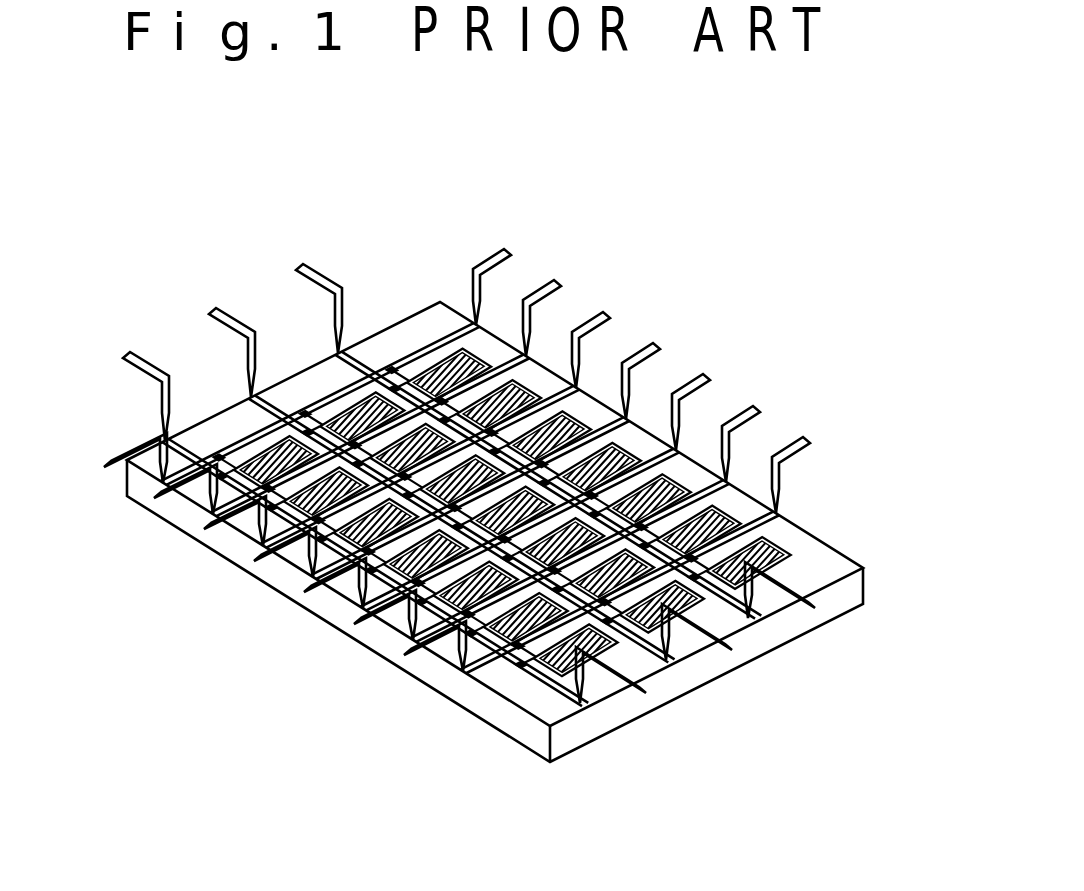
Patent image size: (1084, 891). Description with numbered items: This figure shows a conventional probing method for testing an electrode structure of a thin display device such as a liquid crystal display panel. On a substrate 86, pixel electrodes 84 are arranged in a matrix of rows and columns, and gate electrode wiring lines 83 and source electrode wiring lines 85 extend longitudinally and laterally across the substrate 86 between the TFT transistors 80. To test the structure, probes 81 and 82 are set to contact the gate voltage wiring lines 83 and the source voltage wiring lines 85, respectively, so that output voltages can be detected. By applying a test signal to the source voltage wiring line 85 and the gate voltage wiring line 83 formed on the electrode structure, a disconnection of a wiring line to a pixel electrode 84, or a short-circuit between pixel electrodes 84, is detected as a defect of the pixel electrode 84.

The TFT transistor 80 is at (309, 414).
The probe 81 is at (608, 316).
The probe 82 is at (127, 362).
The gate electrode wiring line 83 is at (770, 522).
The pixel electrode 84 is at (450, 372).
The source electrode wiring line 85 is at (650, 690).
The substrate 86 is at (440, 690).